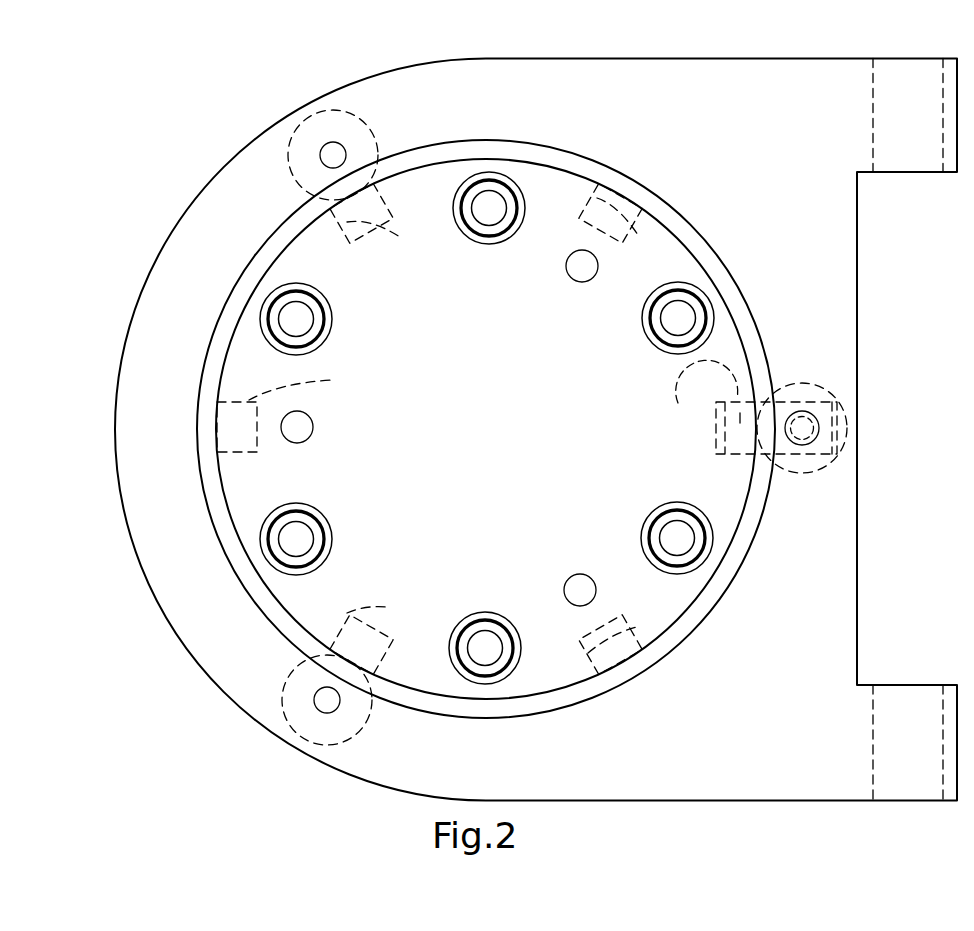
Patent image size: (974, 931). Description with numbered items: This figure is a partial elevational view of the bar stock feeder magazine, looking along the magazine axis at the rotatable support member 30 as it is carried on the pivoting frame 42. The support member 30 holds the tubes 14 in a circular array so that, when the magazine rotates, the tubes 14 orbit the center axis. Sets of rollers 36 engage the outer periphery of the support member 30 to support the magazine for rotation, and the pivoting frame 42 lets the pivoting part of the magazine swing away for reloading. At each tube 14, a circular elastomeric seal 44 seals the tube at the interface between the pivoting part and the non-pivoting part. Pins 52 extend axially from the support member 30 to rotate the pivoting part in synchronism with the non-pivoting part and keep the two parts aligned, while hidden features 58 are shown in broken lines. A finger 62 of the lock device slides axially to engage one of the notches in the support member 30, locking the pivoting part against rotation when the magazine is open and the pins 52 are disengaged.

The pivoting frame 42 is at (570, 91).
The rotatable support member 30 is at (552, 191).
The rollers 36 is at (348, 185).
The tubes 14 is at (280, 318).
The circular elastomeric seals 44 is at (333, 326).
The pins 52 is at (577, 263).
The hidden slots 58 is at (394, 226).
The finger 62 is at (683, 399).